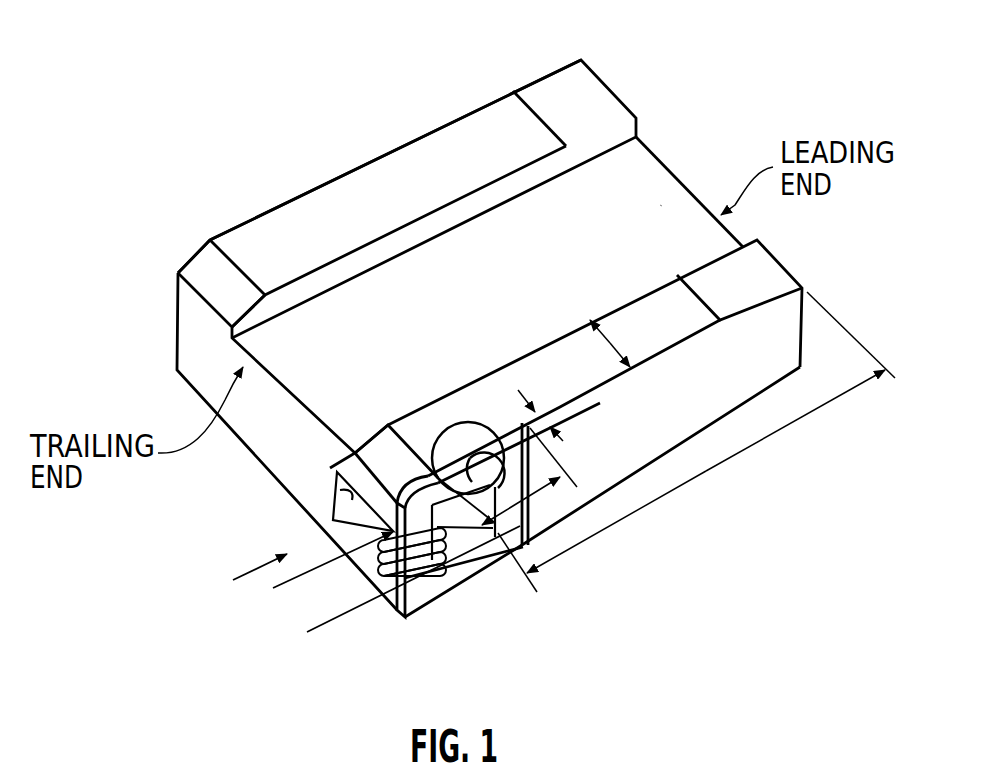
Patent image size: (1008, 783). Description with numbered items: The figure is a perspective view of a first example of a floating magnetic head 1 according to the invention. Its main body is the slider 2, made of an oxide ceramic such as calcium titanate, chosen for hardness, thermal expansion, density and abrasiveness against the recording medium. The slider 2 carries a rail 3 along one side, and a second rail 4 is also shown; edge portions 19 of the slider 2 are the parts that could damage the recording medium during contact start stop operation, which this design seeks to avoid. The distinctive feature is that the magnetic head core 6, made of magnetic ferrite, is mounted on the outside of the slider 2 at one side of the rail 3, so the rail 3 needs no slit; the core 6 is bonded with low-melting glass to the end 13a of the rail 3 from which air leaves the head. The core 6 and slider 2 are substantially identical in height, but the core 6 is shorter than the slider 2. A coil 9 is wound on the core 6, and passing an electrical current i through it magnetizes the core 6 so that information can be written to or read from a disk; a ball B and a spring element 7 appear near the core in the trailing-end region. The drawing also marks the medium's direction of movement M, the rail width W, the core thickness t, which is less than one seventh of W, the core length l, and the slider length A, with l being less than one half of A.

The floating magnetic head 1 is at (624, 81).
The slider 2 is at (660, 205).
The rail 3 is at (688, 305).
The rear guide rail 4 is at (430, 161).
The magnetic head core 6 is at (423, 594).
The spring seat wedge 7 is at (343, 500).
The coil 9 is at (345, 616).
The end of the rail 13a is at (213, 280).
The edge portion 19 is at (322, 183).
The ball B is at (468, 457).
The direction of movement of the magnetic recording medium M is at (648, 145).
The rail width W is at (619, 339).
The thickness of the magnetic head core t is at (546, 420).
The length of the magnetic head core l is at (529, 476).
The length of the slider A is at (696, 442).
The electrical current i is at (308, 560).